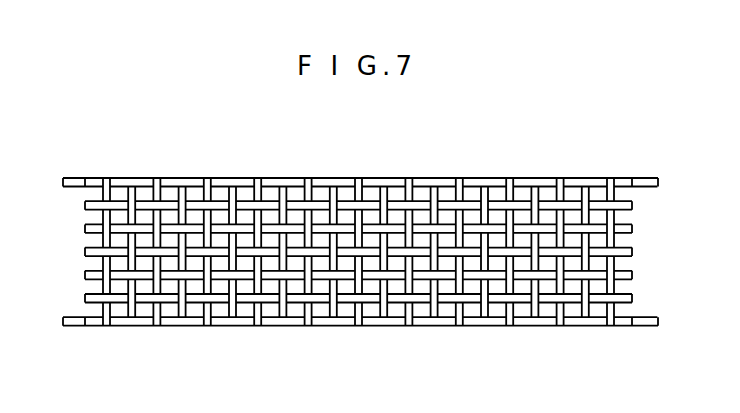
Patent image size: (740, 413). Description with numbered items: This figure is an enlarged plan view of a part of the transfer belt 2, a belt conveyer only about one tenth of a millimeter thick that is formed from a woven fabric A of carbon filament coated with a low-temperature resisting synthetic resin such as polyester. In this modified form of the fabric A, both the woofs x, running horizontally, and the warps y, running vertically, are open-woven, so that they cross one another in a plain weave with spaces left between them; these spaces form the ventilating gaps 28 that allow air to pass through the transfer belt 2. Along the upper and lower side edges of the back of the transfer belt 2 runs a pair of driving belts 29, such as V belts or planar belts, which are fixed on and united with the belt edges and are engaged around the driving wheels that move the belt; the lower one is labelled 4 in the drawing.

The transfer belt 2 is at (496, 170).
The ventilating gaps 28 is at (342, 193).
The driving belt 29 is at (643, 177).
The bottom edge wire 4 is at (647, 323).
The woven fabric A is at (423, 183).
The woofs x is at (266, 192).
The warps y is at (448, 273).